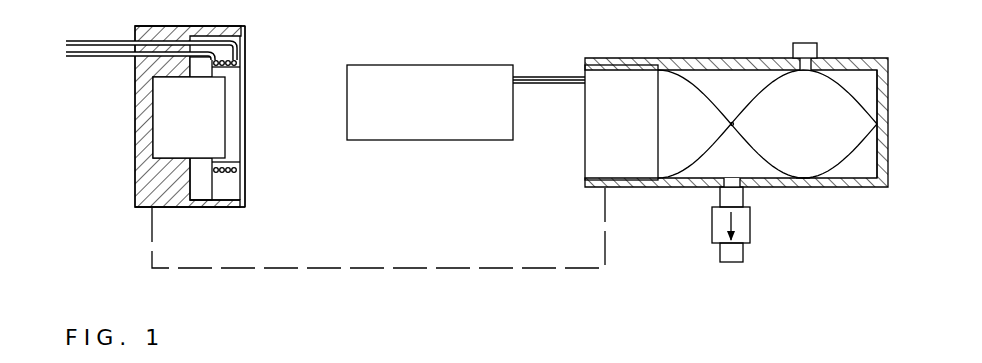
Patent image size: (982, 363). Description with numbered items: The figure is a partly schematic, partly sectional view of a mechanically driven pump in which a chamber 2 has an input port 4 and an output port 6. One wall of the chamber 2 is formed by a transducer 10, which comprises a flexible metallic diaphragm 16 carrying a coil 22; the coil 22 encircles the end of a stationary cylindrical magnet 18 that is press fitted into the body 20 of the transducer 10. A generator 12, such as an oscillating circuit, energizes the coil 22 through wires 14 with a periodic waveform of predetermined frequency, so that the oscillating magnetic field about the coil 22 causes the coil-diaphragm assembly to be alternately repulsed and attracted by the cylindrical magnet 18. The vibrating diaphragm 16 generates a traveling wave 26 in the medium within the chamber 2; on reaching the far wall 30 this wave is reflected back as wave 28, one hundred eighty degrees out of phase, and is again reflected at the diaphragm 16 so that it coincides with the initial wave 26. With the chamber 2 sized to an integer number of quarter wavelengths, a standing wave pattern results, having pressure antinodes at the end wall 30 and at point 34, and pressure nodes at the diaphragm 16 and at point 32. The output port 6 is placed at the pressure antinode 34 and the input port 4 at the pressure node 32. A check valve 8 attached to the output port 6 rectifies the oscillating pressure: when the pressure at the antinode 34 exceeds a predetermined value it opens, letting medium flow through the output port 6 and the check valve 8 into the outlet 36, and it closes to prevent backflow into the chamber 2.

The chamber 2 is at (720, 60).
The input port 4 is at (799, 67).
The output port 6 is at (740, 190).
The check valve 8 is at (750, 236).
The transducer 10 is at (128, 190).
The generator 12 is at (430, 102).
The wires 14 is at (88, 65).
The flexible metallic diaphragm 16 is at (248, 103).
The cylindrical magnet 18 is at (172, 135).
The body 20 is at (173, 207).
The coil 22 is at (218, 177).
The traveling wave 26 is at (857, 152).
The reflected wave 28 is at (852, 95).
The far wall 30 is at (875, 92).
The pressure node 32 is at (803, 177).
The pressure antinode 34 is at (732, 130).
The outlet 36 is at (732, 263).